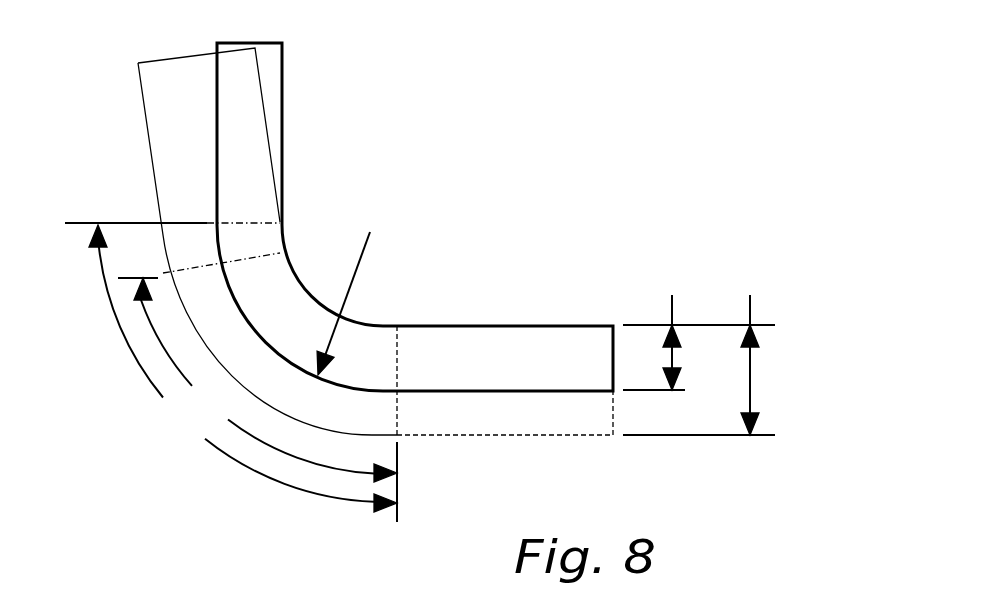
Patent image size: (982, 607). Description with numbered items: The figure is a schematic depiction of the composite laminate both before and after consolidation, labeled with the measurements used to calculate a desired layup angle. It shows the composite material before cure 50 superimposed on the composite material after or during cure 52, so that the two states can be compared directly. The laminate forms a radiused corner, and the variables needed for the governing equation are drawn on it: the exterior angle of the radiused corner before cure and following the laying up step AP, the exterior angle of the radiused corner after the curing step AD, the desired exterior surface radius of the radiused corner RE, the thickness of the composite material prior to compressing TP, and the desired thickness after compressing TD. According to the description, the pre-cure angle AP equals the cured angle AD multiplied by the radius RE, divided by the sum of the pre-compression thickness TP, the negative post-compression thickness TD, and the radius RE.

The composite material before cure 50 is at (142, 95).
The composite material after or during cure 52 is at (282, 83).
The exterior angle of the radiused corner after the curing step AD is at (243, 368).
The exterior angle of the radiused corner before cure AP is at (265, 380).
The desired exterior surface radius of the radiused corner RE is at (362, 287).
The desired thickness of the composite material after the step of compressing TD is at (680, 326).
The thickness of the composite material prior to the step of compressing TP is at (757, 348).